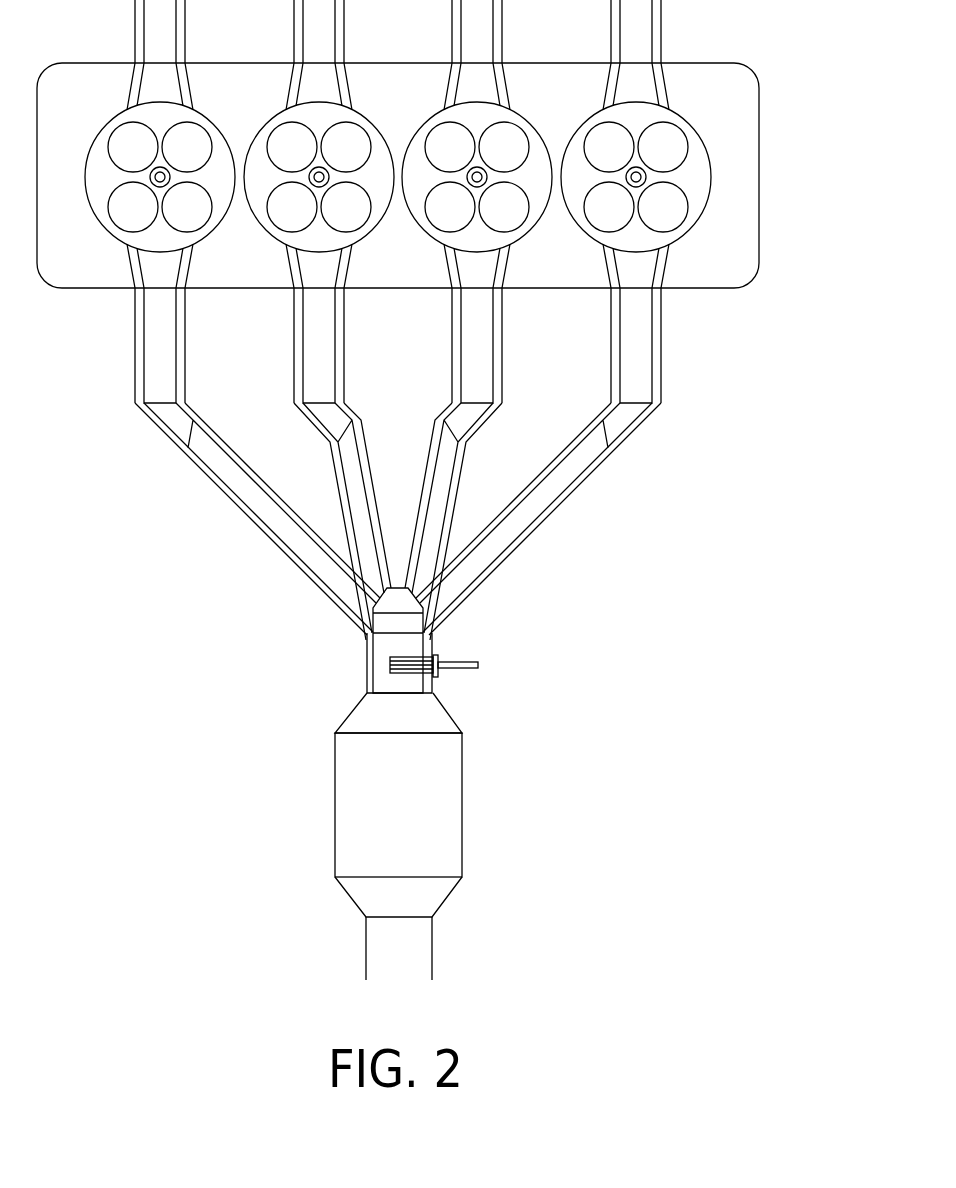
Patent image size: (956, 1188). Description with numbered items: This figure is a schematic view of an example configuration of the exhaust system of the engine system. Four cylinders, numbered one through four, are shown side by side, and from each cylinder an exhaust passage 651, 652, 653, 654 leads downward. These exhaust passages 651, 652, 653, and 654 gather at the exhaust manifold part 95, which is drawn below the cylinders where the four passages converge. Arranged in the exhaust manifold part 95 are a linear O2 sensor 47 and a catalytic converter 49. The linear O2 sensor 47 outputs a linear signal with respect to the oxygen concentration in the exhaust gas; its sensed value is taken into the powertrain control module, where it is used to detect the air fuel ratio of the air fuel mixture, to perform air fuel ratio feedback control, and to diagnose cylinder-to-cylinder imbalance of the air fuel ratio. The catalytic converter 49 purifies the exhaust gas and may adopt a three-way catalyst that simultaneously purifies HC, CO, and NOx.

The exhaust passage 651 is at (143, 366).
The exhaust passage 652 is at (303, 366).
The exhaust passage 653 is at (462, 366).
The exhaust passage 654 is at (620, 366).
The exhaust manifold part 95 is at (385, 667).
The linear O2 sensor 47 is at (461, 673).
The catalytic converter 49 is at (450, 806).